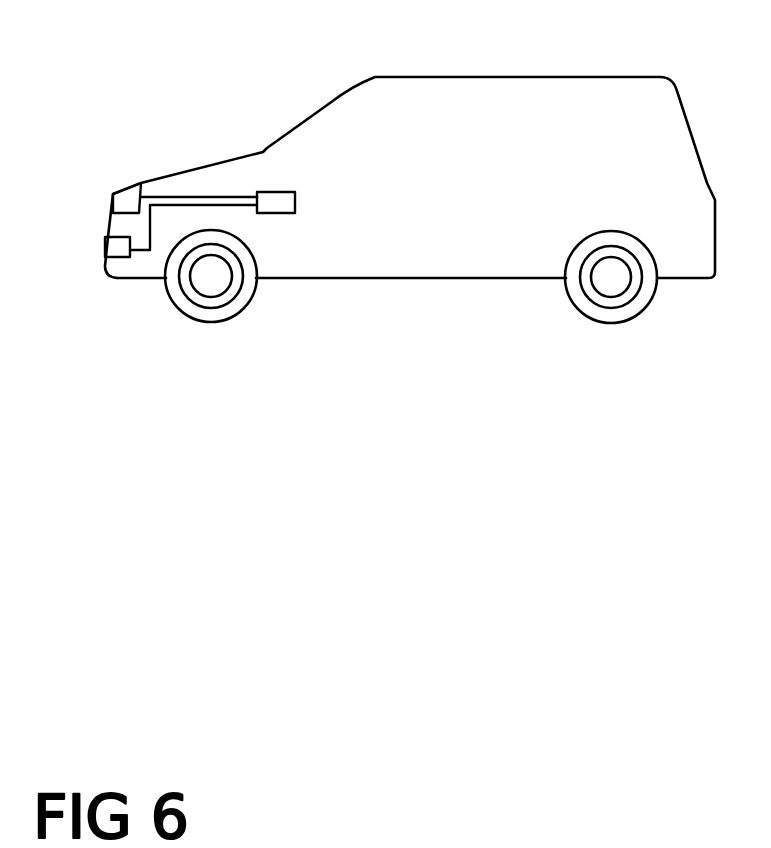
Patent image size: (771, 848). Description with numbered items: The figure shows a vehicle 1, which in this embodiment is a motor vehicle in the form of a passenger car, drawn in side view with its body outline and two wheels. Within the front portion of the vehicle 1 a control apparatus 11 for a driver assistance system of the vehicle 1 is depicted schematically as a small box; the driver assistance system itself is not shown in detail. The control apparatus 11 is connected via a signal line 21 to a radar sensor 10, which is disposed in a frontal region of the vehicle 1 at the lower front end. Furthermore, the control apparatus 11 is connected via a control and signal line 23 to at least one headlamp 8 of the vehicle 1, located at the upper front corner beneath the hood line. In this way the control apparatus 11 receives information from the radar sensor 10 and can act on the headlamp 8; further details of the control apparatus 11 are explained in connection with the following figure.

The vehicle 1 is at (585, 112).
The headlamp 8 is at (125, 202).
The radar sensor 10 is at (111, 247).
The control apparatus 11 is at (282, 202).
The signal line 21 is at (236, 206).
The control and signal line 23 is at (208, 197).